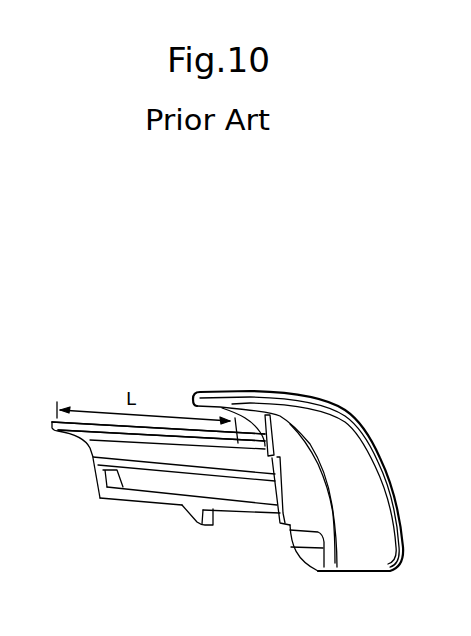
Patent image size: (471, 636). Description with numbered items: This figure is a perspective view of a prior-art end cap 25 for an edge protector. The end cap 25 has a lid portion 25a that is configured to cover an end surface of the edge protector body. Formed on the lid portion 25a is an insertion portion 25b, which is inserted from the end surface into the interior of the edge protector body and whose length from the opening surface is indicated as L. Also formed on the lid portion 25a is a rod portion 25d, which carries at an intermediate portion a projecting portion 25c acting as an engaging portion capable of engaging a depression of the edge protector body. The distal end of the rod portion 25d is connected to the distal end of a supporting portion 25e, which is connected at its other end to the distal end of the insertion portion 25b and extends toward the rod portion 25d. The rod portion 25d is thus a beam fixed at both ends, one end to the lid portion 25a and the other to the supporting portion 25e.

The end cap 25 is at (369, 421).
The lid portion 25a is at (308, 513).
The insertion portion 25b is at (127, 430).
The projecting portion 25c is at (197, 524).
The rod portion 25d is at (167, 499).
The supporting portion 25e is at (100, 480).